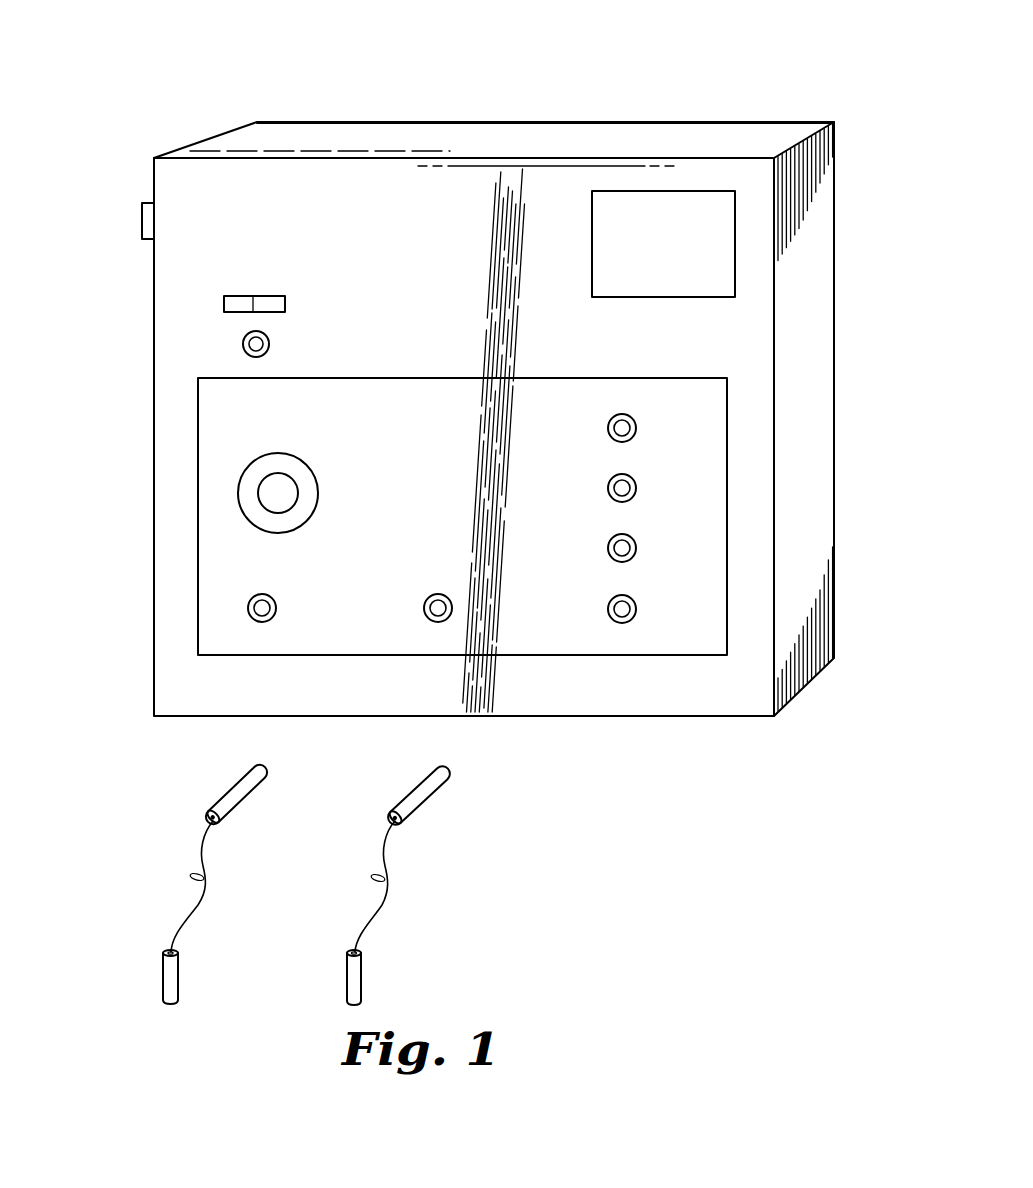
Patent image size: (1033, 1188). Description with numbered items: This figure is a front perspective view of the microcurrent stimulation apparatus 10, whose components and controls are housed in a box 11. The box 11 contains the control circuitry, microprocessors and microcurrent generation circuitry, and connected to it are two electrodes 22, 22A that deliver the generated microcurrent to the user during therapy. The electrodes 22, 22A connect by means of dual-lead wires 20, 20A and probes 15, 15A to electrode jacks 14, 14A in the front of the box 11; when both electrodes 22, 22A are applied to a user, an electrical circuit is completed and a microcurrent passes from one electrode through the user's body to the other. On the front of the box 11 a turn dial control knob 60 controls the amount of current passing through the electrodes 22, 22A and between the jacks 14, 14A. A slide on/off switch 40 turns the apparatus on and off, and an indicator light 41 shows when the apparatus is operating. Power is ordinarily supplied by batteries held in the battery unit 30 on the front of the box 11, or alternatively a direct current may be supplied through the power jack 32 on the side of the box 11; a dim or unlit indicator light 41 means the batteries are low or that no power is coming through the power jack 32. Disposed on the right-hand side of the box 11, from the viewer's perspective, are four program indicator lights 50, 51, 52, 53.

The microcurrent stimulation apparatus 10 is at (218, 71).
The box 11 is at (618, 158).
The power jack 32 is at (142, 220).
The slide on/off switch 40 is at (272, 296).
The indicator light 41 is at (243, 344).
The battery unit 30 is at (670, 254).
The turn dial control knob 60 is at (297, 458).
The electrode jack 14 is at (265, 594).
The electrode jack 14A is at (441, 594).
The program indicator light 50 is at (607, 425).
The program indicator light 51 is at (607, 485).
The program indicator light 52 is at (607, 545).
The program indicator light 53 is at (607, 606).
The probe 15 is at (220, 800).
The probe 15A is at (430, 802).
The dual-lead wire 20 is at (200, 862).
The dual-lead wire 20A is at (388, 897).
The electrode 22 is at (163, 977).
The electrode 22A is at (362, 975).